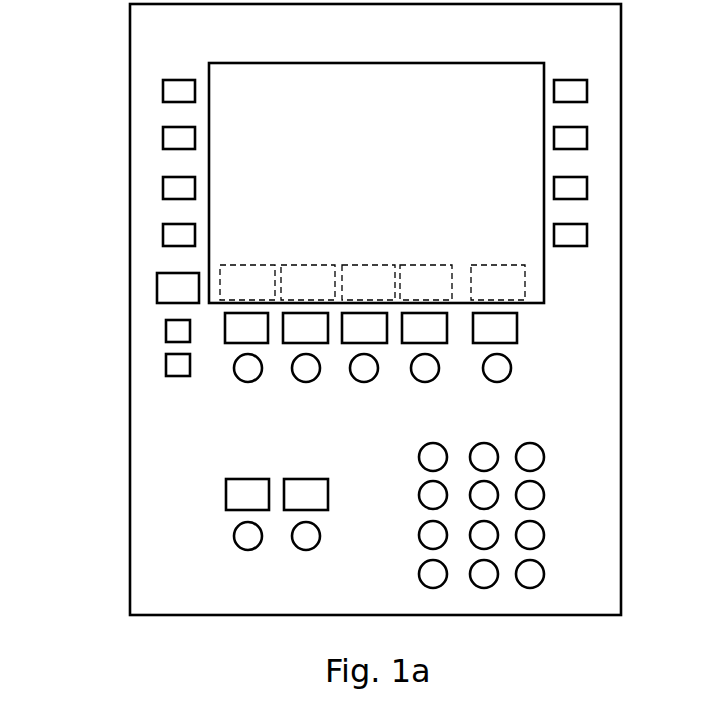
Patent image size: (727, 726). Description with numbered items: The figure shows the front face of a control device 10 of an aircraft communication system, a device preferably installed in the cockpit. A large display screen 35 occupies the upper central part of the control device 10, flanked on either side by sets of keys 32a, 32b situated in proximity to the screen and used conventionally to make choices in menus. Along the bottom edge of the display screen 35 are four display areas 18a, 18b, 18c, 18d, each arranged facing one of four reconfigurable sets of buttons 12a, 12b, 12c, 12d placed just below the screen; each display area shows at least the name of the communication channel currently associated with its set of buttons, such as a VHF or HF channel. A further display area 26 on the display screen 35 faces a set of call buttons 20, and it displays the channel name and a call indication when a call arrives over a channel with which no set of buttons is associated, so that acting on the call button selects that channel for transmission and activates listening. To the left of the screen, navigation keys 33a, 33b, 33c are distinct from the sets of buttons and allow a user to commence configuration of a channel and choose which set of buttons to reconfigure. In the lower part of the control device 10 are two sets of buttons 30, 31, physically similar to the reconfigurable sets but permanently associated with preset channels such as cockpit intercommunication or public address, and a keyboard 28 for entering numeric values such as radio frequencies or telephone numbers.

The control device 10 is at (130, 71).
The display screen 35 is at (416, 63).
The set of keys 32a is at (177, 66).
The set of keys 32b is at (570, 66).
The display area 18a is at (243, 263).
The display area 18b is at (304, 263).
The display area 18c is at (364, 263).
The display area 18d is at (421, 263).
The display area 26 is at (492, 263).
The navigation key 33a is at (157, 288).
The navigation key 33b is at (166, 331).
The navigation key 33c is at (166, 366).
The set of buttons 12a is at (236, 388).
The set of buttons 12b is at (294, 388).
The set of buttons 12c is at (353, 388).
The set of buttons 12d is at (413, 388).
The set of call buttons 20 is at (512, 388).
The keyboard 28 is at (402, 573).
The set of buttons 30 is at (235, 551).
The set of buttons 31 is at (295, 551).